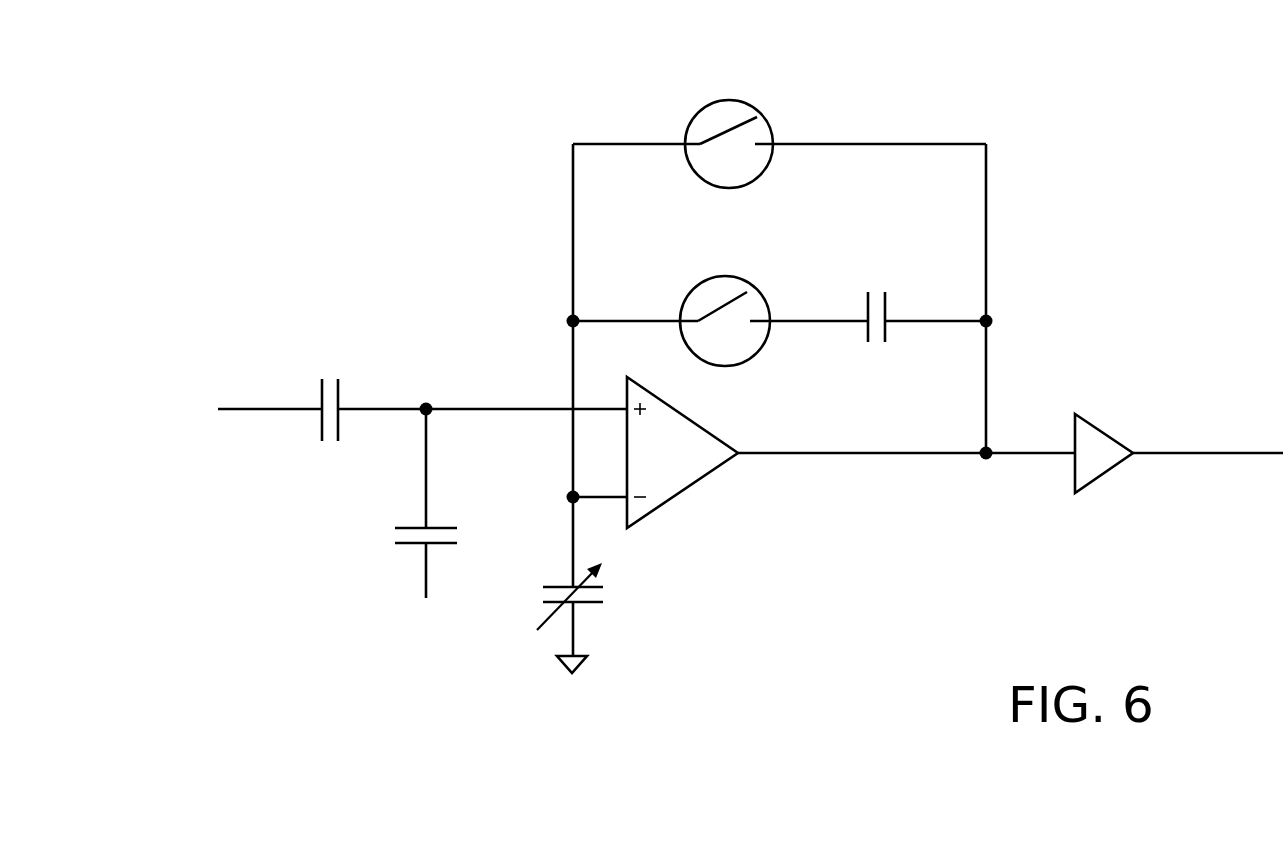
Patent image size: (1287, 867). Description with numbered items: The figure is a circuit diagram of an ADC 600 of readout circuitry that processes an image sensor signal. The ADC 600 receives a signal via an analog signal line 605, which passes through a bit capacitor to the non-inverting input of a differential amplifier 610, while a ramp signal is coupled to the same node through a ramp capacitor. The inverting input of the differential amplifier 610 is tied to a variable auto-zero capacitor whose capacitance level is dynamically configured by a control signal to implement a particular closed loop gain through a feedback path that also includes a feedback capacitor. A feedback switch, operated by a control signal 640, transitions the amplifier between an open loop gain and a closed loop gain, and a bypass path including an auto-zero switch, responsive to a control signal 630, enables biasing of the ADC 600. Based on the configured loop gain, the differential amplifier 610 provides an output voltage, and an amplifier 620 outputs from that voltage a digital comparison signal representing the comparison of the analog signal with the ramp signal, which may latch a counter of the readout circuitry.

The ADC 600 is at (266, 159).
The analog signal line 605 is at (270, 396).
The differential amplifier 610 is at (680, 492).
The amplifier 620 is at (1095, 480).
The control signal 630 is at (730, 67).
The control signal 640 is at (727, 248).